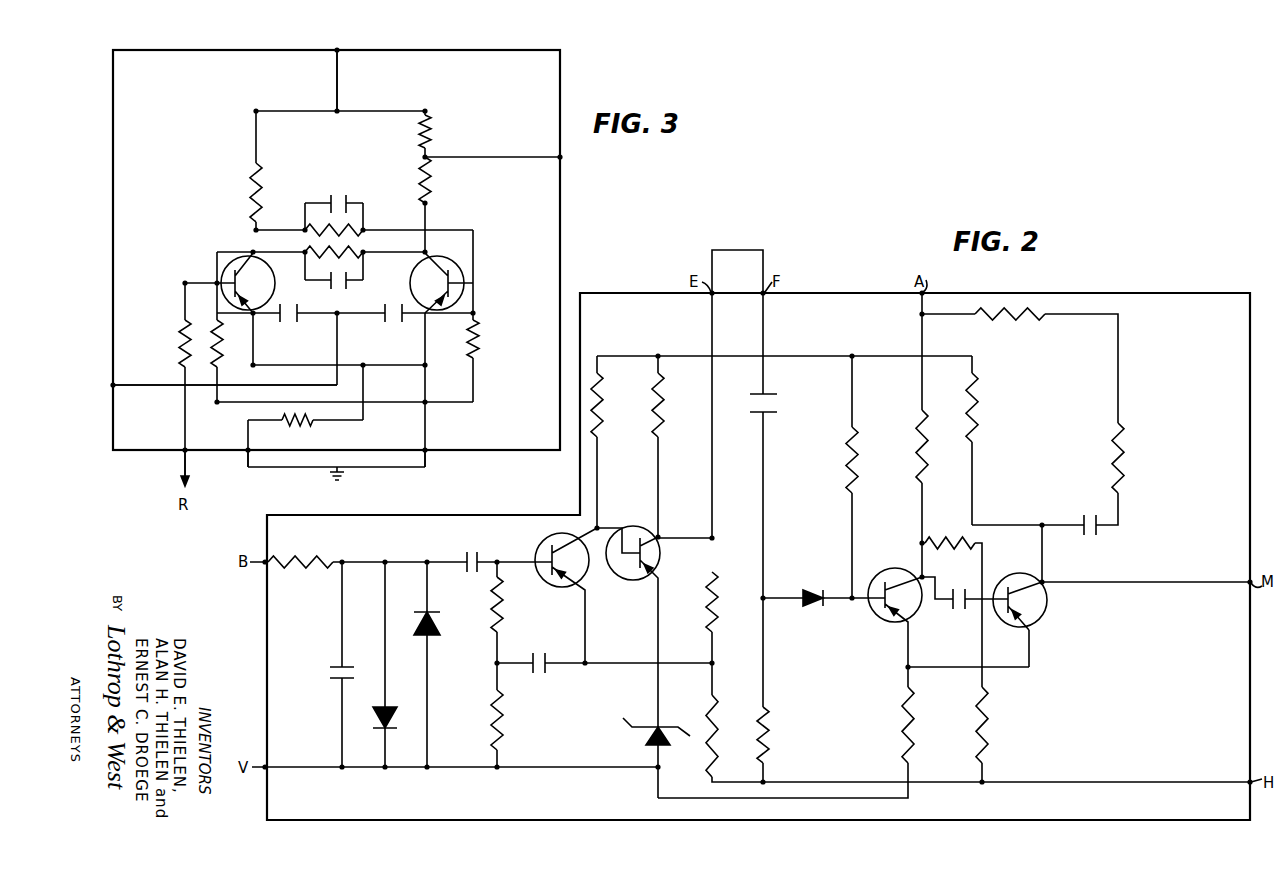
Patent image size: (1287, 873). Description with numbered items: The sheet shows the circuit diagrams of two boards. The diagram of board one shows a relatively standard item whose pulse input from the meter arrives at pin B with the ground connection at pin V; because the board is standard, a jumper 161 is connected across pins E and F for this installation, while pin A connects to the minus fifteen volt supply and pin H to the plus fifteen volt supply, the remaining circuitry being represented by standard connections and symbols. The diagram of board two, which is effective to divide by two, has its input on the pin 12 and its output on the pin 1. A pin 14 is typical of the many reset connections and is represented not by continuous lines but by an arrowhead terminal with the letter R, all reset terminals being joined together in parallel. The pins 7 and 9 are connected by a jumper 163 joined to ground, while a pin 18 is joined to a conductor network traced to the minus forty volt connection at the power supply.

In FIG. 3, the pin 18 is at (339, 52).
In FIG. 3, the pin 1 is at (561, 159).
In FIG. 3, the pin 12 is at (112, 385).
In FIG. 3, the pin 14 is at (187, 455).
In FIG. 3, the pin 9 is at (247, 456).
In FIG. 3, the jumper 163 is at (336, 470).
In FIG. 3, the pin 7 is at (426, 456).
In FIG. 2, the jumper 161 is at (753, 250).